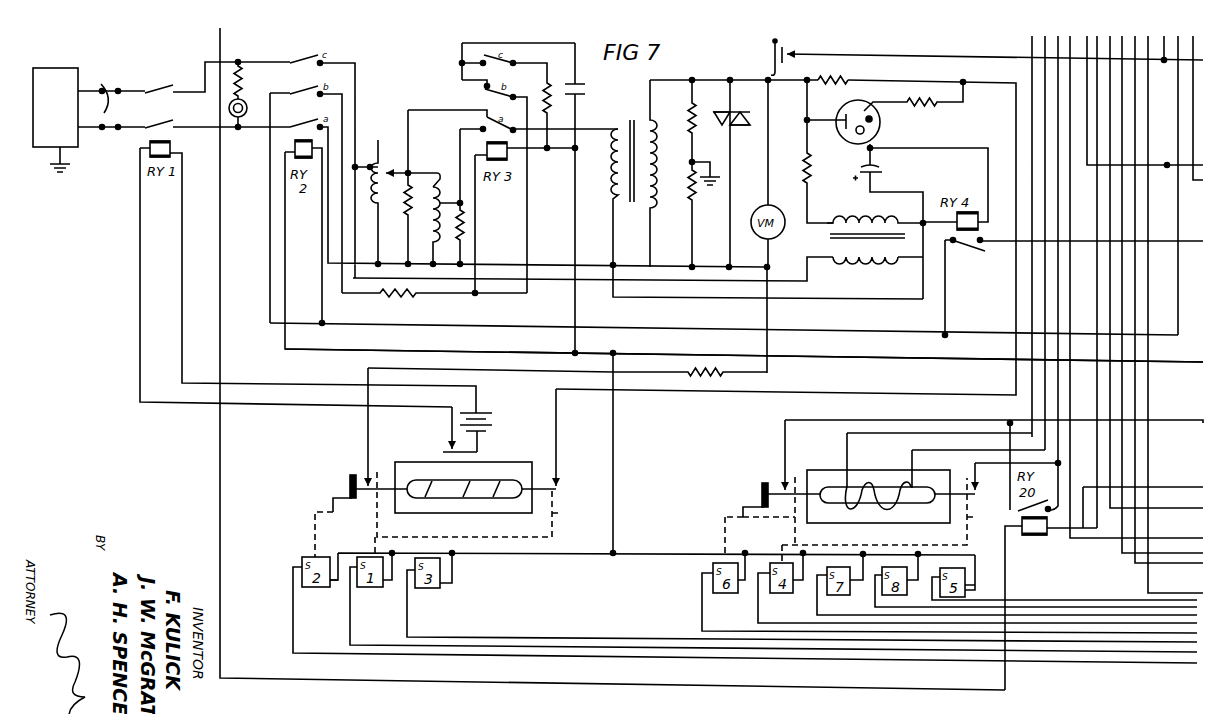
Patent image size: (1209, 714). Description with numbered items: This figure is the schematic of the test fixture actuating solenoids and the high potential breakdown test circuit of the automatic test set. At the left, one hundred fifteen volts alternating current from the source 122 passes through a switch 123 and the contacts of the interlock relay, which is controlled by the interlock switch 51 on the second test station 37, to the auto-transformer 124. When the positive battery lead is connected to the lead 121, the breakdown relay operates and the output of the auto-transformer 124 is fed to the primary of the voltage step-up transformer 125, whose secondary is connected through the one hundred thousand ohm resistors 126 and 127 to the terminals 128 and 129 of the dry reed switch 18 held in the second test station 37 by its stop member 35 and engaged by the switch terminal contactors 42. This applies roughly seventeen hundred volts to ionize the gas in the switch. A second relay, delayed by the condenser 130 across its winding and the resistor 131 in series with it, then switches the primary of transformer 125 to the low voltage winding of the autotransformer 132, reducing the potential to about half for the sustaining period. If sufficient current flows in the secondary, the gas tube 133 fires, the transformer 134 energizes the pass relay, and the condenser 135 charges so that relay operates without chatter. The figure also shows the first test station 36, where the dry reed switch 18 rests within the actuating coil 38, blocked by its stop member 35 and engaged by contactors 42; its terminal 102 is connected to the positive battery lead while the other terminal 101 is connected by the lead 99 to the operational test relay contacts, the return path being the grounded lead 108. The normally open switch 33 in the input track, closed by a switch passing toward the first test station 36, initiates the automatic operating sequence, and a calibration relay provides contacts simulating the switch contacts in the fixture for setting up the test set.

The alternating current source 122 is at (63, 78).
The switch 123 is at (184, 96).
The condenser 130 is at (595, 85).
The voltage step-up transformer 125 is at (645, 128).
The normally open switch 33 is at (773, 50).
The 100,000 ohm resistor 126 is at (837, 82).
The gas tube 133 is at (875, 127).
The condenser 135 is at (883, 173).
The auto-transformer 124 is at (392, 203).
The autotransformer 132 is at (436, 233).
The transformer 134 is at (638, 248).
The resistor 131 is at (391, 296).
The lead 121 is at (866, 316).
The lead 99 is at (1058, 287).
The 100,000 ohm resistor 127 is at (567, 365).
The grounded lead 108 is at (891, 364).
The second test station 37 is at (492, 445).
The interlock switch 51 is at (447, 448).
The dry reed switch 18 is at (497, 490).
The switch terminal 129 is at (363, 477).
The stop member 35 is at (349, 486).
The switch terminal 128 is at (560, 489).
The switch terminal contactors 42 is at (377, 512).
The first test station 36 is at (778, 474).
The switch terminal 102 is at (787, 478).
The actuating coil 38 is at (892, 490).
The switch terminal 101 is at (973, 484).